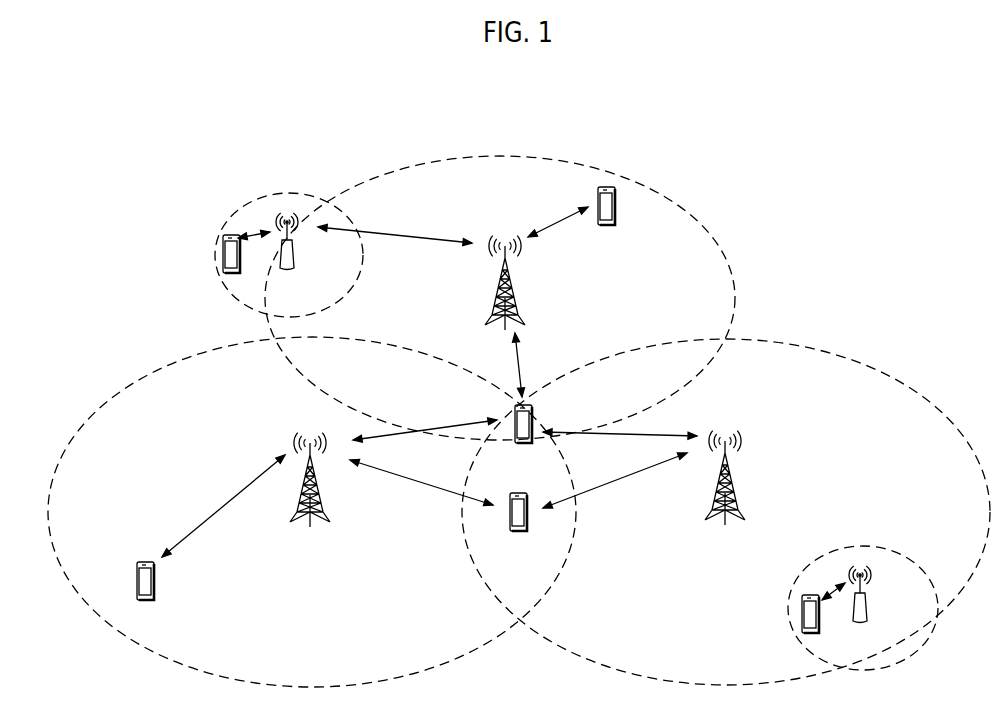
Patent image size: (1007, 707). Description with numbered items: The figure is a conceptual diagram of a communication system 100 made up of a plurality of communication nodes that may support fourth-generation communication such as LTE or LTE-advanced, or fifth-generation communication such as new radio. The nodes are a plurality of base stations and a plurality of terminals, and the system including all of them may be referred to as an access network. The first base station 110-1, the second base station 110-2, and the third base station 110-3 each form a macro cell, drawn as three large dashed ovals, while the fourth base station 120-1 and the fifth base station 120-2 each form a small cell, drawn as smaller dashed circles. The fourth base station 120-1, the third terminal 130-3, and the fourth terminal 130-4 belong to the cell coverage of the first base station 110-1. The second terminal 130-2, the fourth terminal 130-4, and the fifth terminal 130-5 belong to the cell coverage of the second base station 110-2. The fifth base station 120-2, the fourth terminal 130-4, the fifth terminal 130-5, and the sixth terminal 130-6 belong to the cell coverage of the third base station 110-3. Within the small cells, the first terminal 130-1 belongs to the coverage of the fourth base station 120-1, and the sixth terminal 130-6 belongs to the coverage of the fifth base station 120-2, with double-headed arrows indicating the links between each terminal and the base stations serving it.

The communication system 100 is at (509, 133).
The first base station 110-1 is at (515, 284).
The second base station 110-2 is at (310, 527).
The third base station 110-3 is at (738, 483).
The fourth base station 120-1 is at (296, 262).
The fifth base station 120-2 is at (868, 600).
The first terminal 130-1 is at (240, 253).
The second terminal 130-2 is at (155, 580).
The third terminal 130-3 is at (617, 210).
The fourth terminal 130-4 is at (534, 408).
The fifth terminal 130-5 is at (519, 490).
The sixth terminal 130-6 is at (802, 612).